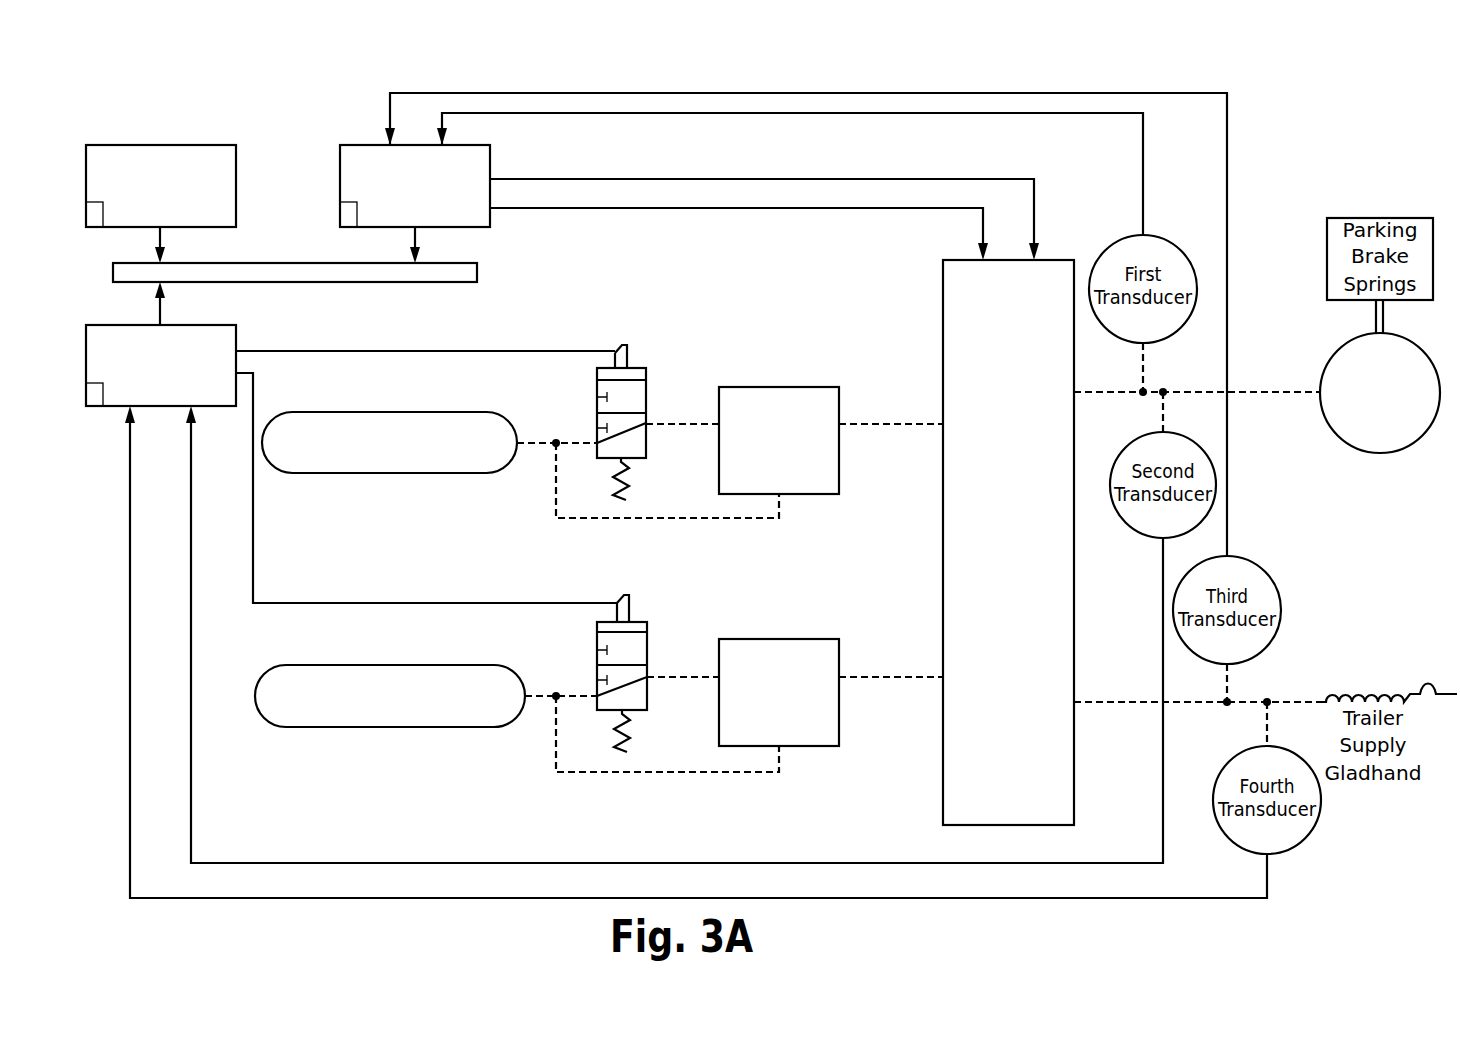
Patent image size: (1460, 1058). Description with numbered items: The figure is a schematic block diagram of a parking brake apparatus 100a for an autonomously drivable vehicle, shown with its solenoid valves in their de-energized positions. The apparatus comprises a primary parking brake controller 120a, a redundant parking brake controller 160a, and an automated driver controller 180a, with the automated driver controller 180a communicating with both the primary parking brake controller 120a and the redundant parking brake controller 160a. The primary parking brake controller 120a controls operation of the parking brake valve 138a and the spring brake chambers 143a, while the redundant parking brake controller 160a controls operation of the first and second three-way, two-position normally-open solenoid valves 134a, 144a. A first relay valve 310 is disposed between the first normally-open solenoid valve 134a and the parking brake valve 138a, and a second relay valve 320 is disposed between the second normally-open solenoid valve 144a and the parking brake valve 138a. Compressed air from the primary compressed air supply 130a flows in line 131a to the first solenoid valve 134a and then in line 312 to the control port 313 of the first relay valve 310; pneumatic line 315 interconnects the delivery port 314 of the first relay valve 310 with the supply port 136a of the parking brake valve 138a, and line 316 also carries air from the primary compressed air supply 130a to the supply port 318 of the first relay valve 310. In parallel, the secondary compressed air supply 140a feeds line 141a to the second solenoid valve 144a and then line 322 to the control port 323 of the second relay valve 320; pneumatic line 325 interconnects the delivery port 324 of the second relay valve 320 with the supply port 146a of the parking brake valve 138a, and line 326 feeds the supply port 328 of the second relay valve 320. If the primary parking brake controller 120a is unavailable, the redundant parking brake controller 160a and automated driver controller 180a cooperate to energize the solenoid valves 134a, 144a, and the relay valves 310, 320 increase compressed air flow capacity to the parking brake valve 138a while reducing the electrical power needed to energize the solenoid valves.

The parking brake apparatus 100a is at (260, 110).
The primary parking brake controller 120a is at (364, 142).
The automated driver controller 180a is at (236, 162).
The redundant parking brake controller 160a is at (236, 337).
The primary compressed air supply 130a is at (372, 412).
The line 131a is at (533, 441).
The first 3/2 normally-open solenoid valve 134a is at (645, 366).
The line 312 is at (672, 422).
The first relay valve 310 is at (775, 436).
The control port 313 is at (717, 428).
The delivery port 314 is at (840, 421).
The pneumatic line 315 is at (893, 427).
The line 316 is at (580, 518).
The supply port 318 is at (782, 494).
The supply port 136a is at (941, 422).
The parking brake valve 138a is at (959, 546).
The spring brake chambers 143a is at (1322, 378).
The secondary compressed air supply 140a is at (385, 727).
The line 141a is at (535, 694).
The second 3/2 normally-open solenoid valve 144a is at (647, 620).
The line 322 is at (672, 675).
The second relay valve 320 is at (789, 700).
The control port 323 is at (717, 683).
The delivery port 324 is at (841, 674).
The pneumatic line 325 is at (884, 690).
The line 326 is at (654, 774).
The supply port 328 is at (782, 746).
The supply port 146a is at (941, 681).